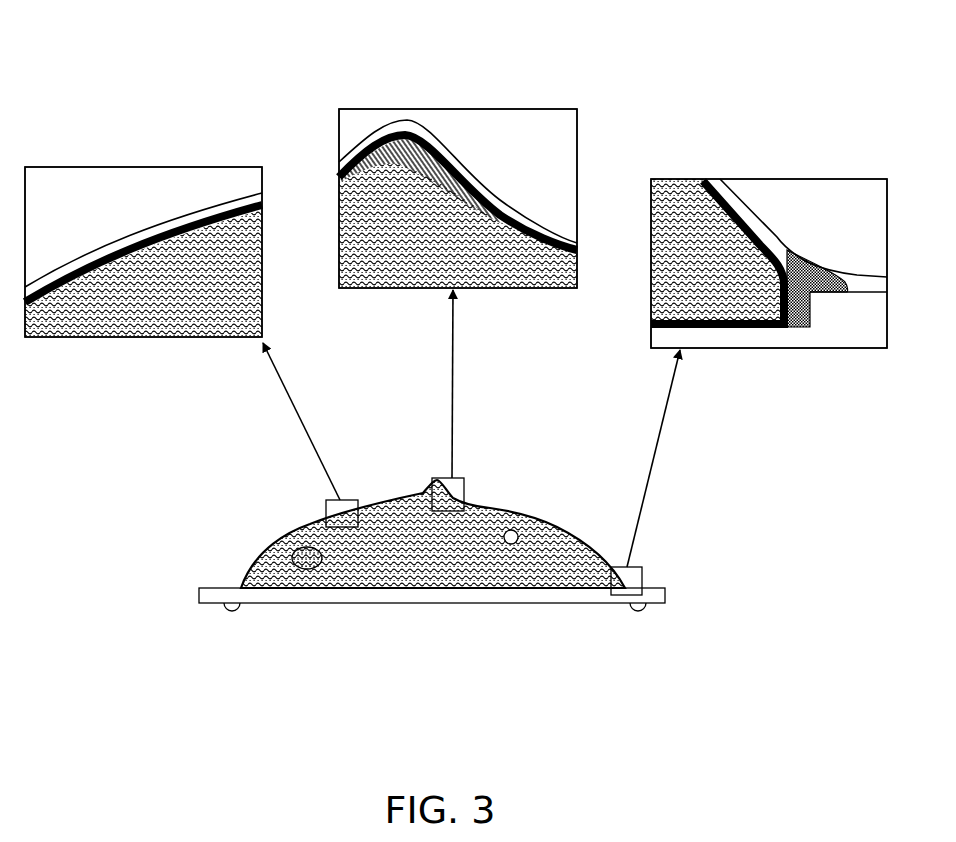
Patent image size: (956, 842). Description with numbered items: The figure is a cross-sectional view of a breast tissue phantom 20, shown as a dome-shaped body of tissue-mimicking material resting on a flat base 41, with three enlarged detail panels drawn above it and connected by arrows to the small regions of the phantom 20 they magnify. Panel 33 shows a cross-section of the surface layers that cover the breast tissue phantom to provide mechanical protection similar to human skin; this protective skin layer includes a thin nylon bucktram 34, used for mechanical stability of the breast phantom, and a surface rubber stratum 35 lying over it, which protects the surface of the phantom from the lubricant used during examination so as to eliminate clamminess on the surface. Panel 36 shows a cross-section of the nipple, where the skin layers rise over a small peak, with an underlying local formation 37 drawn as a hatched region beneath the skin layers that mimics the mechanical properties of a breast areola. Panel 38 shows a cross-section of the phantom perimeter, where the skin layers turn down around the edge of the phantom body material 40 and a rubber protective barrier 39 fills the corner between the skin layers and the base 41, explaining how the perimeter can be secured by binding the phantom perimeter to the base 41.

The article / molded body on substrate 20 is at (236, 537).
The panel 33 is at (77, 163).
The thin nylon bucktram 34 is at (155, 230).
The surface rubber stratum 35 is at (202, 212).
The panel 36 is at (400, 109).
The local formation 37 is at (427, 163).
The panel 38 is at (742, 178).
The rubber protective barrier 39 is at (800, 283).
The body material 40 is at (765, 310).
The base 41 is at (822, 327).